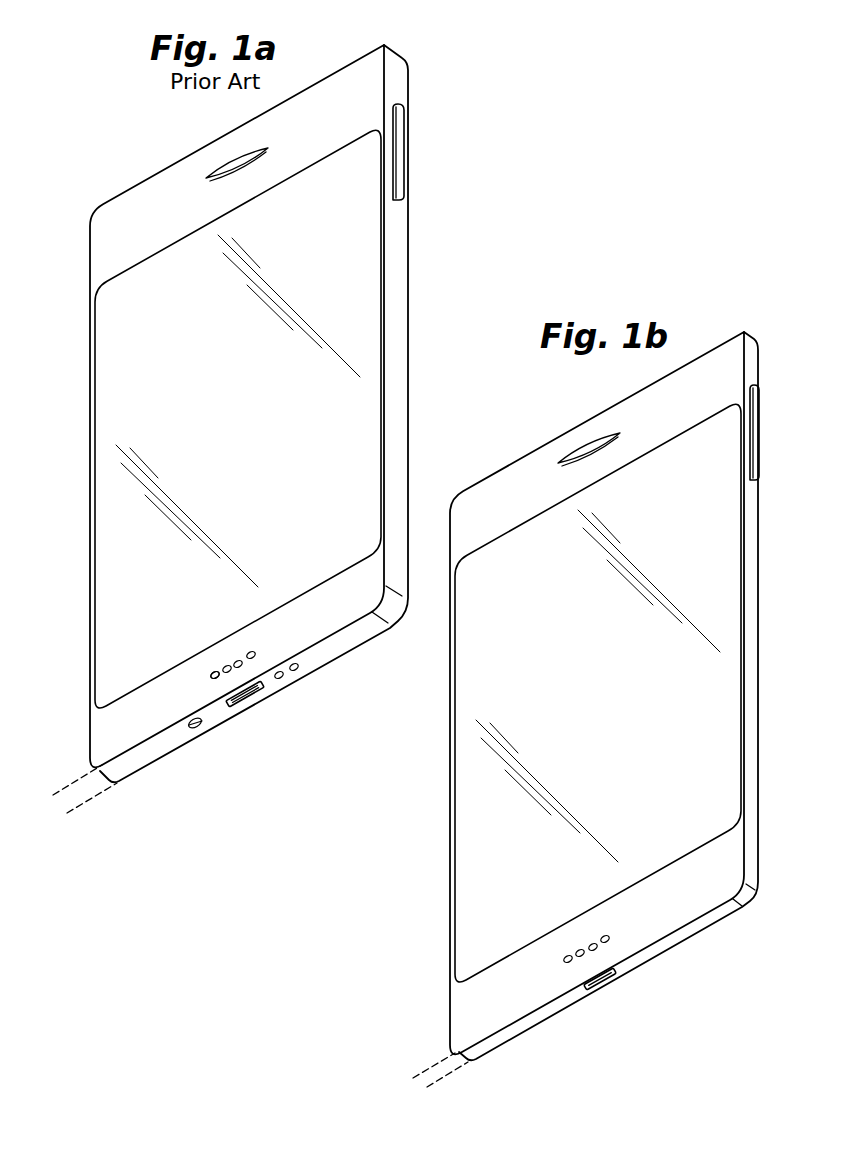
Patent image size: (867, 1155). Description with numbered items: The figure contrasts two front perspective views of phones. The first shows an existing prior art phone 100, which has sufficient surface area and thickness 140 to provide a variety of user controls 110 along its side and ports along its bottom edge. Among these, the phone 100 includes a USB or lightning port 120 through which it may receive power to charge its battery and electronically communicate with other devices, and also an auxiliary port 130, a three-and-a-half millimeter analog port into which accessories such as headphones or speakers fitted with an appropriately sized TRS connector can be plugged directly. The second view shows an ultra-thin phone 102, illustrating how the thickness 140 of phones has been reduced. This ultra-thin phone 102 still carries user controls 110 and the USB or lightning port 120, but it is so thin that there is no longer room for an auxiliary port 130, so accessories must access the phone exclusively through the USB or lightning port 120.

In FIG. 1a, the phone 100 is at (107, 182).
In FIG. 1b, the ultra-thin phone 102 is at (541, 429).
In FIG. 1a, the user controls 110 is at (400, 121).
In FIG. 1b, the user controls 110 is at (756, 401).
In FIG. 1a, the USB or lightning port 120 is at (247, 704).
In FIG. 1b, the USB or lightning port 120 is at (601, 990).
In FIG. 1a, the auxiliary port 130 is at (196, 729).
In FIG. 1a, the thickness 140 is at (27, 762).
In FIG. 1b, the thickness 140 is at (498, 1107).